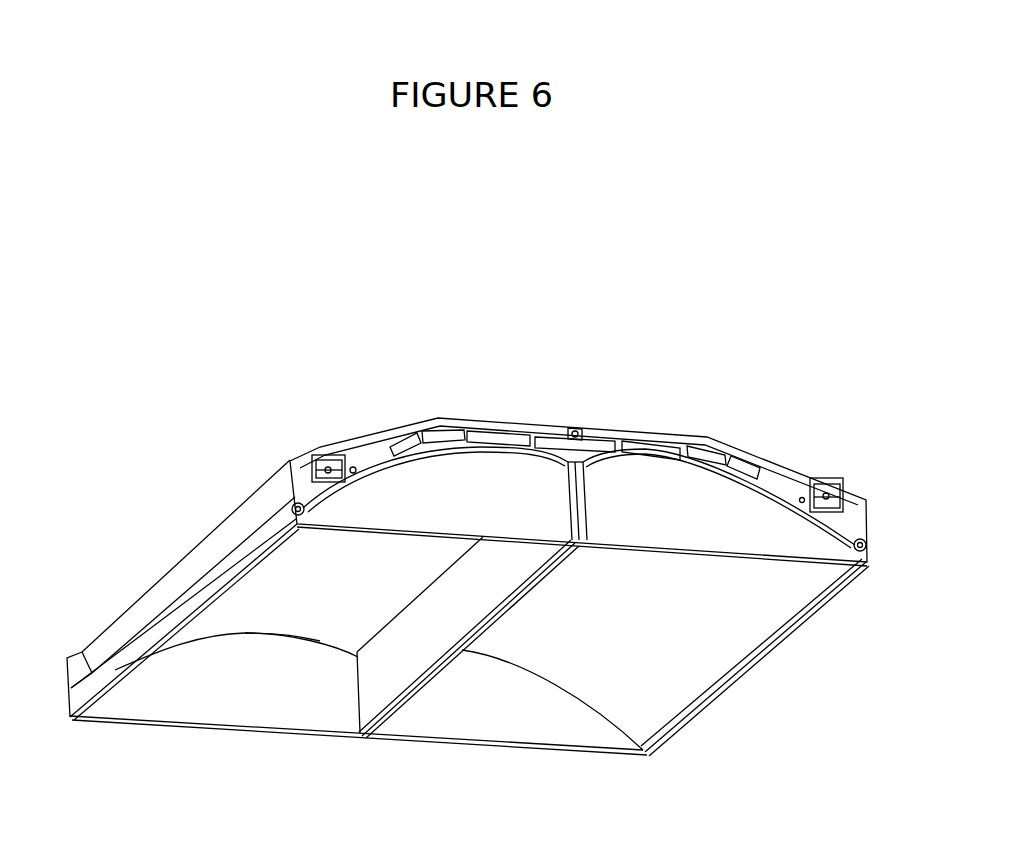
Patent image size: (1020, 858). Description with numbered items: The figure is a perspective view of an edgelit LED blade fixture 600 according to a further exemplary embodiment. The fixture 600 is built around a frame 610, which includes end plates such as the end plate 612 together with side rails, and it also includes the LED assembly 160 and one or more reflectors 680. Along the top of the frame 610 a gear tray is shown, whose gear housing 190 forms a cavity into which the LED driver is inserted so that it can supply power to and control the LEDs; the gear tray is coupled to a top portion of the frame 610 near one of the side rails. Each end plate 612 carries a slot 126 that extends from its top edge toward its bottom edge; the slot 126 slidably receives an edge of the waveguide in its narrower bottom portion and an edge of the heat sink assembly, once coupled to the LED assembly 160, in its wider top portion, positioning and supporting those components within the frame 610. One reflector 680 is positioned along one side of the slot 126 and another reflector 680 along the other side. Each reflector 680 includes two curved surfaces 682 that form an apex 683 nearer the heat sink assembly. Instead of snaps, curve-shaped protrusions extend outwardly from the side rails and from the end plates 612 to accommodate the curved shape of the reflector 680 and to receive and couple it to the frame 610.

The edgelit LED blade fixture 600 is at (646, 326).
The frame 610 is at (728, 430).
The gear housing 190 is at (195, 548).
The curved surface 682 is at (178, 658).
The reflector 680 is at (224, 635).
The apex 683 is at (290, 631).
The end plate 612 is at (230, 712).
The LED assembly 160 is at (365, 690).
The slot 126 is at (357, 720).